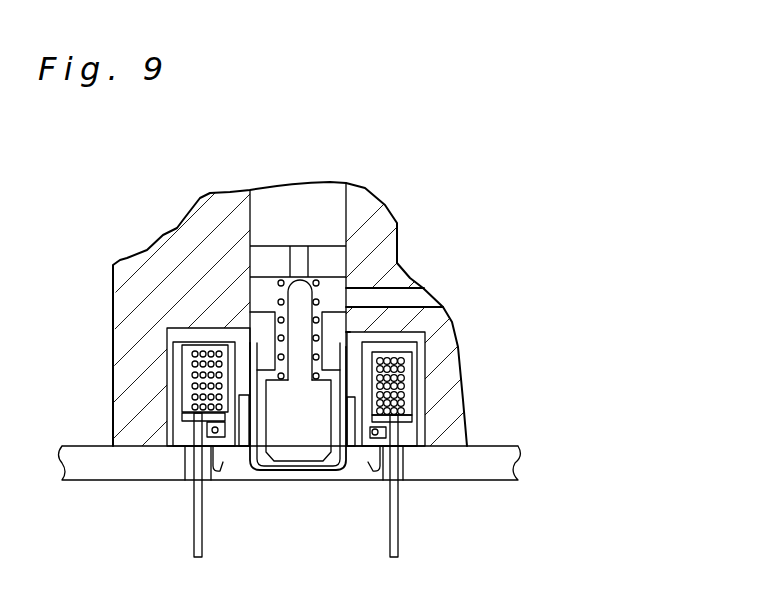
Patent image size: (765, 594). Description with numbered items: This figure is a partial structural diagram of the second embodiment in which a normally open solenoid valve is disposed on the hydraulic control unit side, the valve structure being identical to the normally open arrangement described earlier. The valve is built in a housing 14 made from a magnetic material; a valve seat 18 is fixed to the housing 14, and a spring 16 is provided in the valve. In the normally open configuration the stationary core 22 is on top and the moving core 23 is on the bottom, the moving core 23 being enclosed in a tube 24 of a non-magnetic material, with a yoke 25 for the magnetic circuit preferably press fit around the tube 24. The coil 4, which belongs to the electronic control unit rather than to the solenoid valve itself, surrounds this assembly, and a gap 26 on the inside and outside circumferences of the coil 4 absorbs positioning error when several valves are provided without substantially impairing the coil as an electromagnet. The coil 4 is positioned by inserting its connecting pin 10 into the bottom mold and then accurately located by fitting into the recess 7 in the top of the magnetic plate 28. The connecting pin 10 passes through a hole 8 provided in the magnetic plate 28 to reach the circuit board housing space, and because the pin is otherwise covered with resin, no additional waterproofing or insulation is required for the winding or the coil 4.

The housing 14 is at (145, 270).
The spring 16 is at (282, 282).
The valve seat 18 is at (310, 280).
The stationary core 22 is at (330, 325).
The coil 4 is at (405, 378).
The gap 26 is at (167, 348).
The magnetic plate 28 is at (507, 463).
The recess 7 is at (213, 470).
The hole 8 is at (402, 467).
The connecting pin 10 is at (193, 543).
The tube 24 is at (260, 470).
The yoke 25 is at (354, 436).
The moving core 23 is at (302, 448).